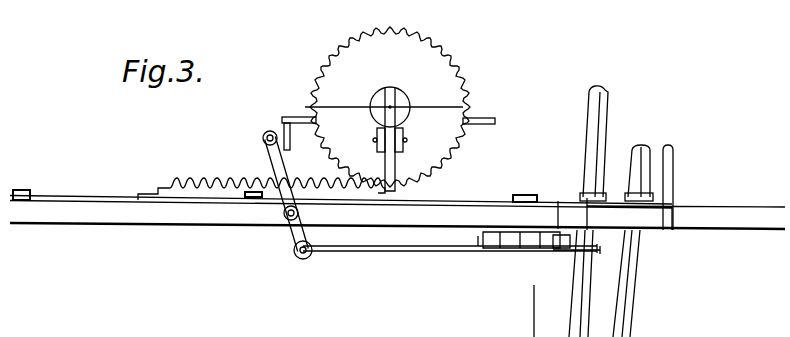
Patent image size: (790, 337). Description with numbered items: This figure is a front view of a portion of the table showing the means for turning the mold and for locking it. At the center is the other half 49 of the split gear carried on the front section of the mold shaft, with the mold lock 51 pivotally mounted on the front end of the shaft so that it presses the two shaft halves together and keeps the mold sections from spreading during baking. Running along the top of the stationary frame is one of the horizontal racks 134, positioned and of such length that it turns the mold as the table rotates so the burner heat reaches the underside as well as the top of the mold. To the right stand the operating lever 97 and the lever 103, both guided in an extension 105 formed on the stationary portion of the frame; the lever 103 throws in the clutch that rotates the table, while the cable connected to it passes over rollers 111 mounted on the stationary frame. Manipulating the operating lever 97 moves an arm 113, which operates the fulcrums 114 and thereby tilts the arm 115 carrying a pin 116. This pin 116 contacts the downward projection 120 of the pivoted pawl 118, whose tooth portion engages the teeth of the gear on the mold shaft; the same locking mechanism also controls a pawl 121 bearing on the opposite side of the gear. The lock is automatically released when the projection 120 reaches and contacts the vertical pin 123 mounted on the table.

The other half of the split gear 49 is at (387, 107).
The mold lock 51 is at (396, 180).
The operating lever 97 is at (604, 112).
The lever 103 is at (641, 310).
The extension 105 is at (615, 214).
The rollers 111 is at (530, 189).
The arm 113 is at (552, 250).
The fulcrums 114 is at (512, 249).
The arm 115 is at (289, 226).
The pin 116 is at (264, 135).
The pivoted pawl 118 is at (283, 117).
The downward projection 120 is at (290, 147).
The pawl 121 is at (486, 118).
The vertical pin 123 is at (674, 170).
The horizontal racks 134 is at (212, 169).